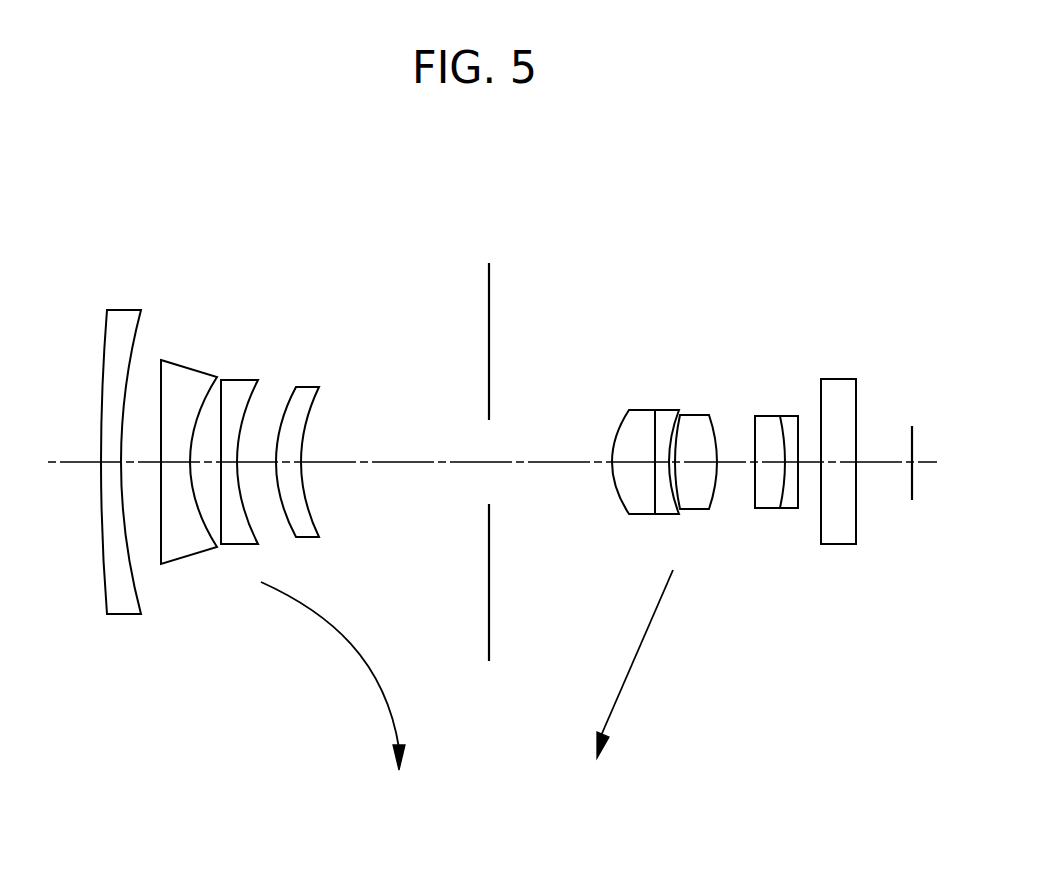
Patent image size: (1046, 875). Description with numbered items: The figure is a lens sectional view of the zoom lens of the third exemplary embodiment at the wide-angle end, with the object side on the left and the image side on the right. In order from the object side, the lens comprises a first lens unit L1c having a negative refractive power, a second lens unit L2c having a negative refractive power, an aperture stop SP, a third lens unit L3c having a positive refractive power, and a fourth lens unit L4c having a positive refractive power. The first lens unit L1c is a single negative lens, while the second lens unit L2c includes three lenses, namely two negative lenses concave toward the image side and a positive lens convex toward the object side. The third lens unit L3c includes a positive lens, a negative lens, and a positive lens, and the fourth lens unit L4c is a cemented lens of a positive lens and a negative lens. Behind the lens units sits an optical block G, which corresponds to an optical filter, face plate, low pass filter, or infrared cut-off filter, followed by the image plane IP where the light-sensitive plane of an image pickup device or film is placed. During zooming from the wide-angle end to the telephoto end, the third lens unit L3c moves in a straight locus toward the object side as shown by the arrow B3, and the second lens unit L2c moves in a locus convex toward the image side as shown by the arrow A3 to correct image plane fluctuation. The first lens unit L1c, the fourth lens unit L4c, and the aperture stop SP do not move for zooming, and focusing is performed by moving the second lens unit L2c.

The first lens unit L1c is at (143, 250).
The second lens unit L2c is at (323, 250).
The aperture stop SP is at (489, 307).
The third lens unit L3c is at (720, 250).
The fourth lens unit L4c is at (804, 250).
The optical block G is at (861, 250).
The image plane IP is at (913, 441).
The movement locus of second lens unit A3 is at (342, 676).
The movement locus of third lens unit B3 is at (637, 664).